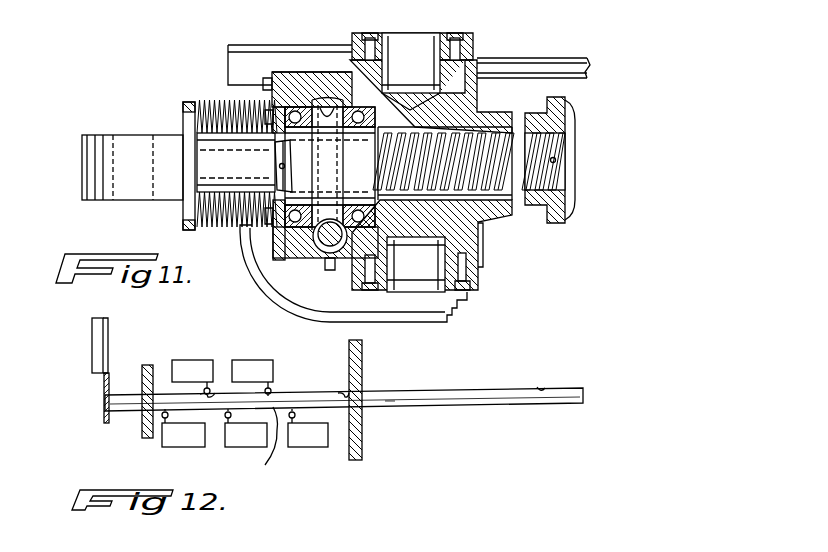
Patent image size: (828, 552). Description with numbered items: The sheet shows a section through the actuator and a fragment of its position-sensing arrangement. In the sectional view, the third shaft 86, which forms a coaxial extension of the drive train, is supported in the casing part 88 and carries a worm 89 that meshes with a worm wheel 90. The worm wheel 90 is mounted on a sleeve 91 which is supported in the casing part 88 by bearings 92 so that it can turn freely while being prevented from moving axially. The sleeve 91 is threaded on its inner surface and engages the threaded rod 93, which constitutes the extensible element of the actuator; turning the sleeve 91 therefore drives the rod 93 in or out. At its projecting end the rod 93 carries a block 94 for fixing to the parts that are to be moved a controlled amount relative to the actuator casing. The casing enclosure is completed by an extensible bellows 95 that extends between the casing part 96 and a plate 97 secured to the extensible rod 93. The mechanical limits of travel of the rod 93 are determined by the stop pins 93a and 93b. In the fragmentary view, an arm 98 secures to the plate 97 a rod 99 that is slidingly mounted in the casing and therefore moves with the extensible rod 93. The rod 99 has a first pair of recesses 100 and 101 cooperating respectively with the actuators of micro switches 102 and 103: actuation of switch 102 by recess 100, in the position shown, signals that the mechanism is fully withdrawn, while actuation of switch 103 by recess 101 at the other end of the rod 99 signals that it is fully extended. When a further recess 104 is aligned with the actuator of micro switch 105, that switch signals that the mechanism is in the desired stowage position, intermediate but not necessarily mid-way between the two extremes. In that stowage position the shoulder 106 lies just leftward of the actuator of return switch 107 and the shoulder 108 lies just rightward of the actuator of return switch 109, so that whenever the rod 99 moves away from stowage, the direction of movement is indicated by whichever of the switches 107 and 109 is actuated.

In FIG. 11, the third shaft 86 is at (326, 246).
In FIG. 11, the casing part 88 is at (330, 270).
In FIG. 11, the worm 89 is at (336, 253).
In FIG. 11, the worm wheel 90 is at (328, 108).
In FIG. 11, the sleeve 91 is at (290, 177).
In FIG. 11, the bearings 92 is at (296, 111).
In FIG. 11, the threaded rod 93 is at (461, 148).
In FIG. 11, the stop pin 93a is at (279, 166).
In FIG. 11, the stop pin 93b is at (556, 160).
In FIG. 11, the block 94 is at (96, 135).
In FIG. 11, the extensible bellows 95 is at (215, 205).
In FIG. 11, the casing part 96 is at (297, 257).
In FIG. 11, the plate 97 is at (186, 115).
In FIG. 12, the plate 97 is at (92, 342).
In FIG. 12, the arm 98 is at (105, 419).
In FIG. 12, the rod 99 is at (122, 397).
In FIG. 12, the recess 100 is at (209, 388).
In FIG. 12, the recess 101 is at (542, 388).
In FIG. 12, the micro switch 102 is at (187, 363).
In FIG. 12, the micro switch 103 is at (254, 364).
In FIG. 12, the recess 104 is at (343, 393).
In FIG. 12, the micro switch 105 is at (253, 447).
In FIG. 12, the shoulder 106 is at (279, 447).
In FIG. 12, the return switch 107 is at (188, 447).
In FIG. 12, the shoulder 108 is at (389, 405).
In FIG. 12, the return switch 109 is at (306, 447).